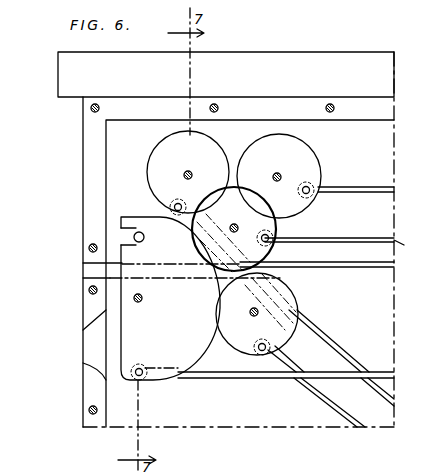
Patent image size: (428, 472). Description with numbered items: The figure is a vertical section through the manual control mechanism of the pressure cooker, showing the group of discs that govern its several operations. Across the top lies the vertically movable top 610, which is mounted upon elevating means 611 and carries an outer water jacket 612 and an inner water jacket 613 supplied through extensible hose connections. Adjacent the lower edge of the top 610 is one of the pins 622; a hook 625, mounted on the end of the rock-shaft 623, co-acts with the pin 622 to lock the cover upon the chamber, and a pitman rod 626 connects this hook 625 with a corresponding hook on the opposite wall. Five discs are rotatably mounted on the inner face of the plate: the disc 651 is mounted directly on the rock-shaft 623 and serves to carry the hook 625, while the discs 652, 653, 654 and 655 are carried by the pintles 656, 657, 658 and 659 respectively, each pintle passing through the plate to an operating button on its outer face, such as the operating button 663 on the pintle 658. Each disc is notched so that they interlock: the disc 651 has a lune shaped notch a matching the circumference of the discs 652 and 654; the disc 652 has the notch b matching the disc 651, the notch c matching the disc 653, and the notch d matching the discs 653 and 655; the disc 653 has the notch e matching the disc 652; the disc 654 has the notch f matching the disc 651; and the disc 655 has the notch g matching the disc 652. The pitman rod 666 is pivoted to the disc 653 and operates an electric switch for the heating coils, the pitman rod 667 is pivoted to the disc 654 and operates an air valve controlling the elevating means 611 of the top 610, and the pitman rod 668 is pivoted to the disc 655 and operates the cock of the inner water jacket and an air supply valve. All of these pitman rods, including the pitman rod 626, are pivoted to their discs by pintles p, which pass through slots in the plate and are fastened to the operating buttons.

The vertically movable top 610 is at (263, 54).
The elevating means 611 is at (255, 239).
The outer water jacket 612 is at (118, 150).
The inner water jacket 613 is at (417, 161).
The pin 622 is at (134, 238).
The rock-shaft 623 is at (133, 298).
The hook 625 is at (121, 218).
The pitman rod 626 is at (231, 373).
The disc 651 is at (130, 340).
The disc 652 is at (278, 228).
The disc 653 is at (318, 152).
The disc 654 is at (297, 301).
The disc 655 is at (167, 150).
The pintle 656 is at (236, 233).
The pintle 657 is at (277, 173).
The pintle 658 is at (254, 308).
The pintle 659 is at (193, 173).
The operating button 663 is at (334, 253).
The pitman rod 666 is at (365, 183).
The pitman rod 667 is at (337, 411).
The pitman rod 668 is at (339, 351).
The lune shaped notch a is at (195, 248).
The lune shaped notch b is at (210, 268).
The lune shaped notch c is at (239, 235).
The lune shaped notch d is at (212, 220).
The lune shaped notch e is at (250, 187).
The lune shaped notch f is at (225, 317).
The lune shaped notch g is at (217, 192).
The pintle p is at (178, 207).